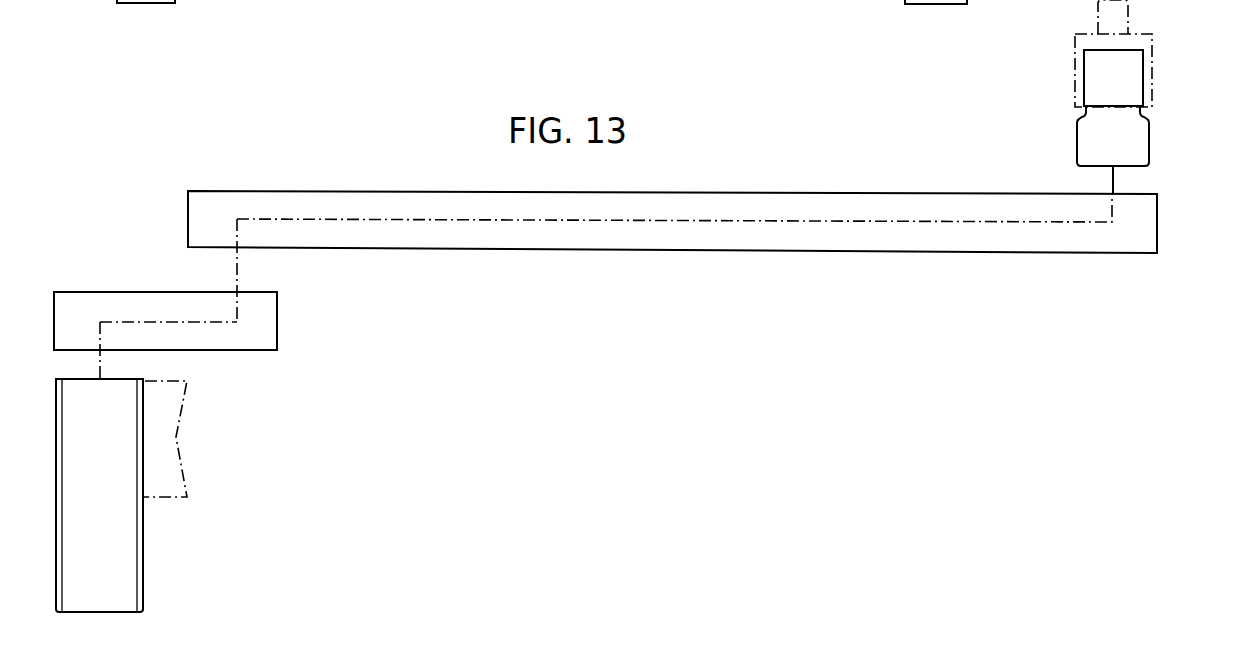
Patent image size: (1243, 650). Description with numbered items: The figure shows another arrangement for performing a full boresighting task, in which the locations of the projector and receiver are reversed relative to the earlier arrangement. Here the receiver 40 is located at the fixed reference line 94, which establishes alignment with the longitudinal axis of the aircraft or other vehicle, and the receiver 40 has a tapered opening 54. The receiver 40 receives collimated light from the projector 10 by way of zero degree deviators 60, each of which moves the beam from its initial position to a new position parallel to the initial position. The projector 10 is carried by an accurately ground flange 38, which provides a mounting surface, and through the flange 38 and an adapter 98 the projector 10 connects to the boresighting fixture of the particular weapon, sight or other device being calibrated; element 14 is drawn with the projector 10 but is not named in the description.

The projector 10 is at (1154, 147).
The cartridge 14 is at (1127, 77).
The flange 38 is at (1073, 50).
The receiver 40 is at (139, 495).
The tapered opening 54 is at (143, 583).
The zero degree deviator 60 is at (885, 180).
The fixed reference line 94 is at (173, 443).
The adapter 98 is at (1097, 13).